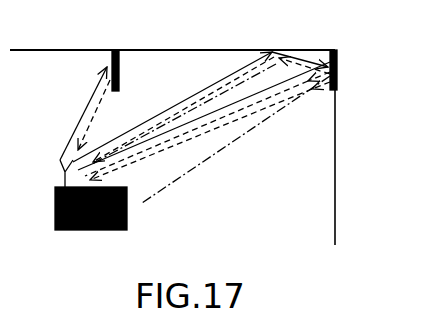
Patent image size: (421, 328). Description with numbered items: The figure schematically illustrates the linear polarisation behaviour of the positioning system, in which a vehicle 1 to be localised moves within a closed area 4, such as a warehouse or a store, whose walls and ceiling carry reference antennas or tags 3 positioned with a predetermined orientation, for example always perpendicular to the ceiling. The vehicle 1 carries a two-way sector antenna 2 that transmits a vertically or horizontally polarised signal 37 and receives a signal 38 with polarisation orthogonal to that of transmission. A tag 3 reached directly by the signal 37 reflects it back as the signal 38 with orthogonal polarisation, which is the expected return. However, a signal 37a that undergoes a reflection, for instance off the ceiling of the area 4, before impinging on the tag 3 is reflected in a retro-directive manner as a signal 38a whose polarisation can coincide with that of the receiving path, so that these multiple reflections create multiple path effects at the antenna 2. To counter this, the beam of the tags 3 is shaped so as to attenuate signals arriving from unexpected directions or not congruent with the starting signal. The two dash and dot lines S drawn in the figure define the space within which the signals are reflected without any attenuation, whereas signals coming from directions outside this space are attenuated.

The vehicle 1 is at (127, 217).
The antenna 2 is at (57, 170).
The reference antenna 3 is at (119, 67).
The area 4 is at (241, 50).
The signal 37 is at (77, 118).
The signal 37a is at (302, 60).
The signal 38 is at (93, 118).
The signal 38a is at (296, 62).
The dash and dot lines S is at (200, 112).